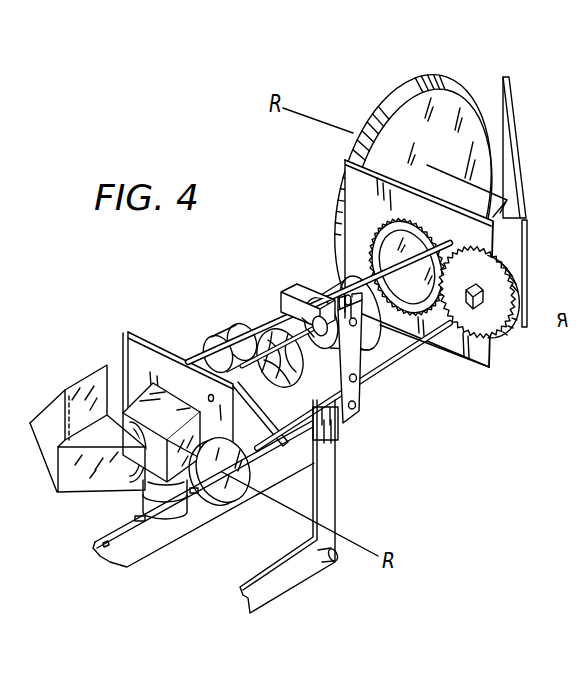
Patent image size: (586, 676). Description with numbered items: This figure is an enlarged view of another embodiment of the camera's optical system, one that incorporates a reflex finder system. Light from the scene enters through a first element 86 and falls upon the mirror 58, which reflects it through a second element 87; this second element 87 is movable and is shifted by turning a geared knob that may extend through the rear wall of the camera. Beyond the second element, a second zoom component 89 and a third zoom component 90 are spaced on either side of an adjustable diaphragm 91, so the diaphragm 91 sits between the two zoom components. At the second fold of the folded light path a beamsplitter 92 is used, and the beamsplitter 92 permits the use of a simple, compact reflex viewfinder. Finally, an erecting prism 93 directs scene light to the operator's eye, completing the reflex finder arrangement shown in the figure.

The mirror 58 is at (503, 93).
The first element 86 is at (408, 92).
The second element 87 is at (393, 232).
The second zoom component 89 is at (317, 288).
The third zoom component 90 is at (216, 349).
The adjustable diaphragm 91 is at (283, 328).
The beamsplitter 92 is at (153, 393).
The erecting prism 93 is at (45, 418).